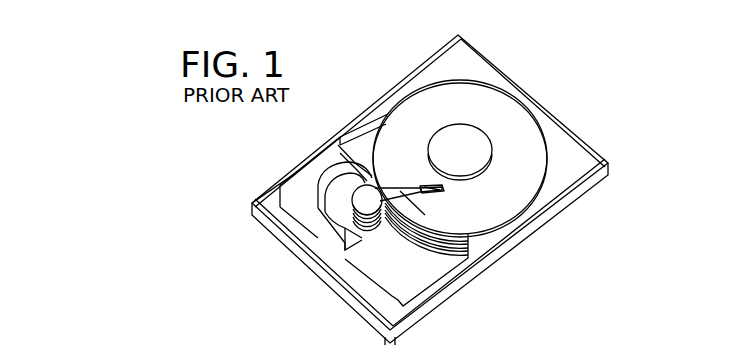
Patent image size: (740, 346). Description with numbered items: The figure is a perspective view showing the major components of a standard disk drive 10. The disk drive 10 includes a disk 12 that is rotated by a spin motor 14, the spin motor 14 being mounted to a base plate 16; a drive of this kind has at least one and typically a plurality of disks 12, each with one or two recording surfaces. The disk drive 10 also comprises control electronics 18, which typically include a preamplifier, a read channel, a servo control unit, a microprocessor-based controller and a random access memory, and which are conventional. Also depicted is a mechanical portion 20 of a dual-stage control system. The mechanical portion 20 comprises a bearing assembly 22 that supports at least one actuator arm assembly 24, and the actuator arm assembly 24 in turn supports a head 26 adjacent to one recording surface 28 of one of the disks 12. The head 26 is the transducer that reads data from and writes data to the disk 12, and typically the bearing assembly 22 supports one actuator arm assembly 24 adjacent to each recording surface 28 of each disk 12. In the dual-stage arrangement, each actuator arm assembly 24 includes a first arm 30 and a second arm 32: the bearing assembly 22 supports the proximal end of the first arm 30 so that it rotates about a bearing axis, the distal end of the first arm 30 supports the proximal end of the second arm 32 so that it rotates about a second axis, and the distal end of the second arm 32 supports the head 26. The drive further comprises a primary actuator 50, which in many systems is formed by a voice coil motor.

The disk drive 10 is at (239, 213).
The disk 12 is at (470, 102).
The spin motor 14 is at (470, 138).
The base plate 16 is at (366, 285).
The control electronics 18 is at (287, 170).
The mechanical portion 20 is at (399, 241).
The bearing assembly 22 is at (368, 205).
The actuator arm assembly 24 is at (403, 184).
The head 26 is at (443, 185).
The recording surface 28 is at (526, 153).
The first arm 30 is at (405, 196).
The second arm 32 is at (422, 190).
The primary actuator 50 is at (340, 220).